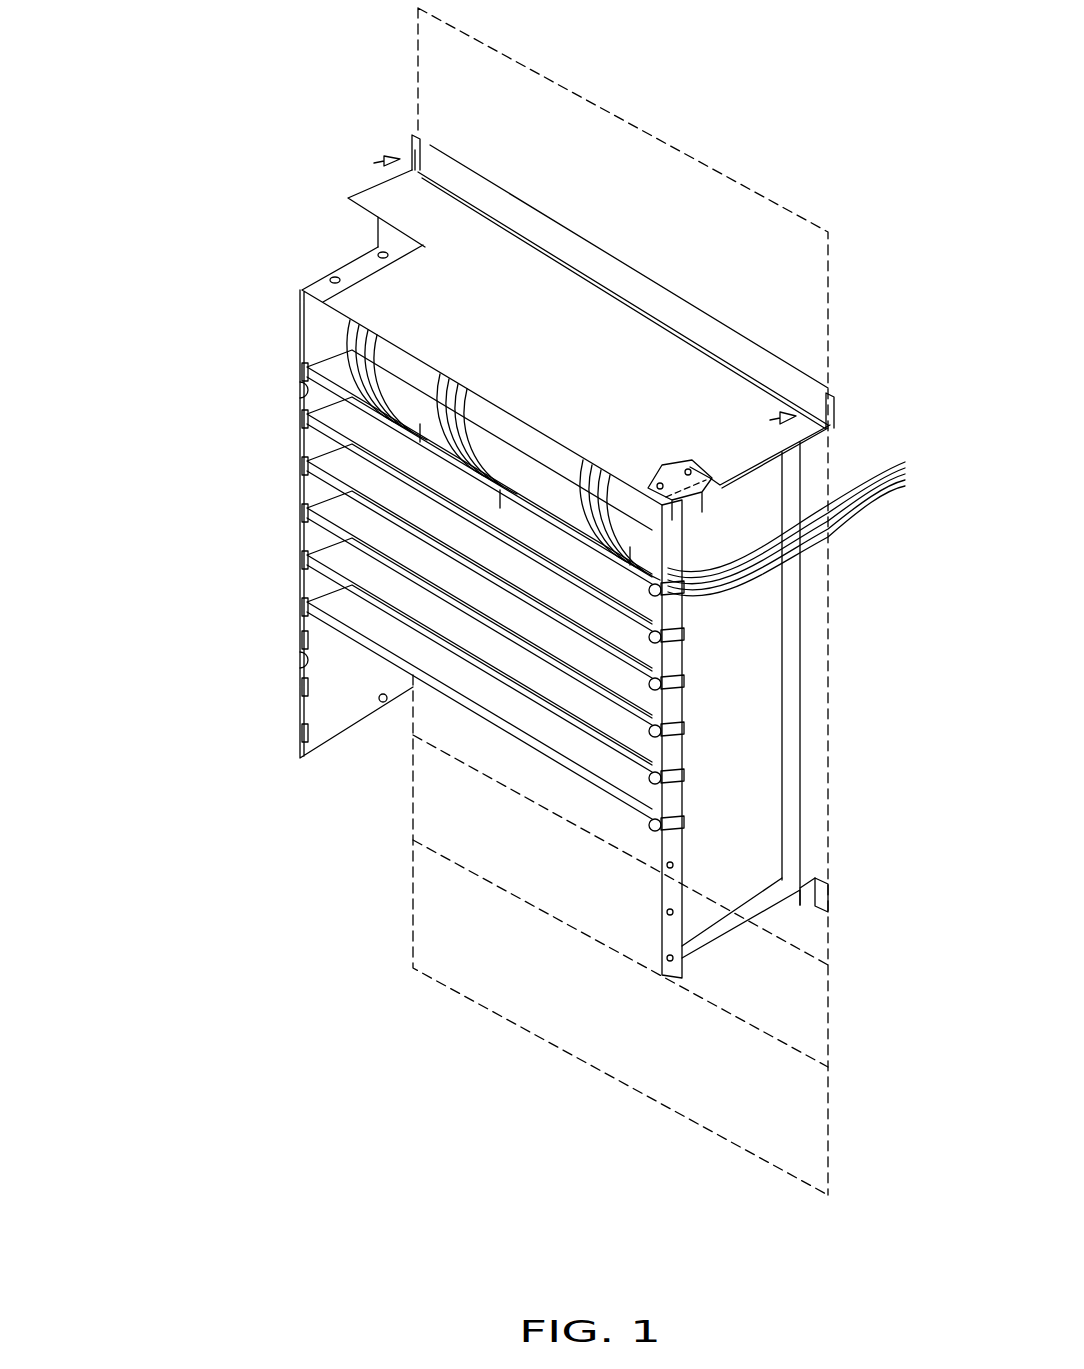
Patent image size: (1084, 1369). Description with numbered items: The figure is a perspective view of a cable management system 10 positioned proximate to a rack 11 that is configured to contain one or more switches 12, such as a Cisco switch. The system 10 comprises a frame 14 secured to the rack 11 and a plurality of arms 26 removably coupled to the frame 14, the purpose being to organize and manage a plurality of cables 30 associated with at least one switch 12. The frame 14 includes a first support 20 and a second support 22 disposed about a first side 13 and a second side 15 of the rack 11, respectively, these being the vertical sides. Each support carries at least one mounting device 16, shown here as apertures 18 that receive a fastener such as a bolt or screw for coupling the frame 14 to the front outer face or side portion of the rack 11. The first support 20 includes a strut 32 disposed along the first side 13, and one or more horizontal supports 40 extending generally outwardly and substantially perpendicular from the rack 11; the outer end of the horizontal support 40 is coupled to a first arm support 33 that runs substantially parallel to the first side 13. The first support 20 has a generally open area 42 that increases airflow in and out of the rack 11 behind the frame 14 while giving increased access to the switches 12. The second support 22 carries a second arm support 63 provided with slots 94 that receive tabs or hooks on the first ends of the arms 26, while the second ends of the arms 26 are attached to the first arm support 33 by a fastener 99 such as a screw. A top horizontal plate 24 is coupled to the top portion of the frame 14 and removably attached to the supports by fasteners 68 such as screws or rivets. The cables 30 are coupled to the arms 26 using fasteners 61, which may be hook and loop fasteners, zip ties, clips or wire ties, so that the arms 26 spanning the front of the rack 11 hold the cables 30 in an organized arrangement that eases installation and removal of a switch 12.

The cable management system 10 is at (242, 104).
The rack 11 is at (708, 162).
The switch 12 is at (723, 1015).
The first side 13 is at (836, 1210).
The frame 14 is at (152, 574).
The second side 15 is at (368, 918).
The mounting device 16 is at (402, 152).
The apertures 18 is at (420, 146).
The first support 20 is at (636, 906).
The second support 22 is at (297, 333).
The top horizontal plate 24 is at (635, 340).
The arms 26 is at (488, 622).
The cables 30 is at (838, 525).
The strut 32 is at (790, 718).
The first arm support 33 is at (660, 942).
The horizontal support 40 is at (725, 905).
The open area 42 is at (733, 791).
The fasteners 61 is at (421, 432).
The second arm support 63 is at (298, 730).
The fasteners 68 is at (380, 254).
The slots 94 is at (298, 640).
The fastener 99 is at (680, 726).